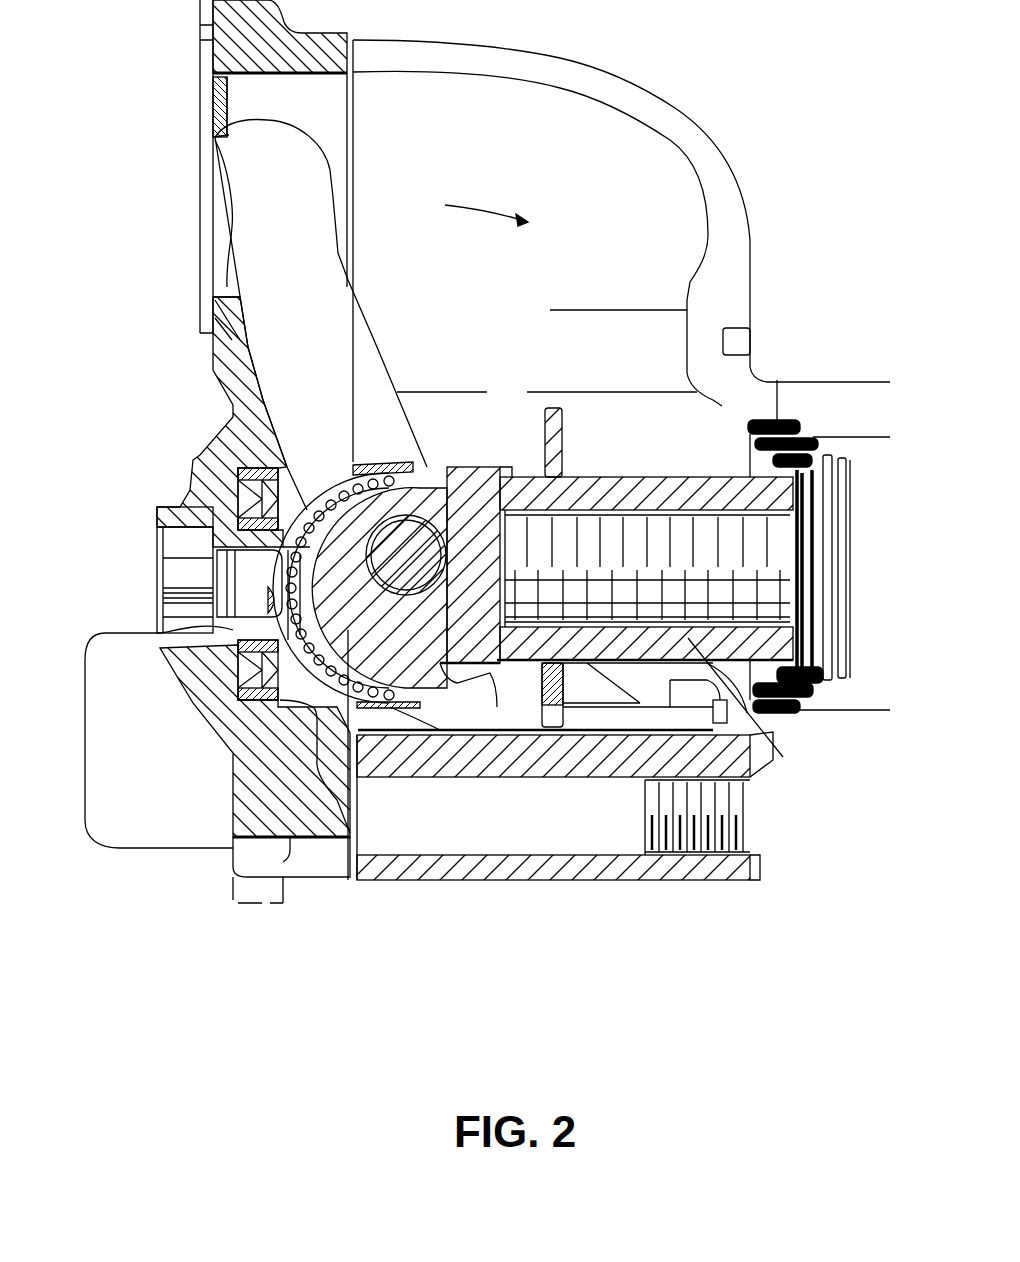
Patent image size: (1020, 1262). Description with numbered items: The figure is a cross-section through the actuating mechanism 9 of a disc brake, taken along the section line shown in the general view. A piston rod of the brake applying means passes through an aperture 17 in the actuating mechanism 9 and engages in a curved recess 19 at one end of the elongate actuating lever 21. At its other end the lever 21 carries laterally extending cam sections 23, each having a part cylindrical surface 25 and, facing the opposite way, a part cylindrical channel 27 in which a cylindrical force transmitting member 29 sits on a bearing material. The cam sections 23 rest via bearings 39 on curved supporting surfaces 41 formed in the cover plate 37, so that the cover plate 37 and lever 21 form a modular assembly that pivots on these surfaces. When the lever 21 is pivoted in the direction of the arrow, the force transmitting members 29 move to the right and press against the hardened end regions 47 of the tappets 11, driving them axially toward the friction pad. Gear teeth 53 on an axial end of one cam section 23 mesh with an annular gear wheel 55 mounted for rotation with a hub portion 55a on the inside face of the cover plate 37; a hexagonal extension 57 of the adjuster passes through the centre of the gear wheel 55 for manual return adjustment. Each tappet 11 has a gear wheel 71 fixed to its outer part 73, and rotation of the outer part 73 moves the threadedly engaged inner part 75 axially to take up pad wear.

The actuating mechanism 9 is at (745, 130).
The tappet 11 is at (687, 714).
The aperture 17 is at (212, 118).
The curved recess 19 is at (222, 220).
The elongate actuating lever 21 is at (355, 357).
The cam section 23 is at (364, 620).
The part cylindrical surface 25 is at (307, 703).
The part cylindrical channel 27 is at (612, 593).
The cylindrical force transmitting member 29 is at (405, 468).
The cover plate 37 is at (205, 465).
The bearing 39 is at (413, 700).
The curved supporting surface 41 is at (300, 680).
The end region 47 is at (467, 485).
The gear teeth 53 is at (262, 790).
The annular gear wheel 55 is at (235, 663).
The hub portion 55a is at (145, 645).
The extension 57 is at (190, 608).
The gear wheel 71 is at (548, 450).
The outer part 73 is at (665, 490).
The inner part 75 is at (765, 595).